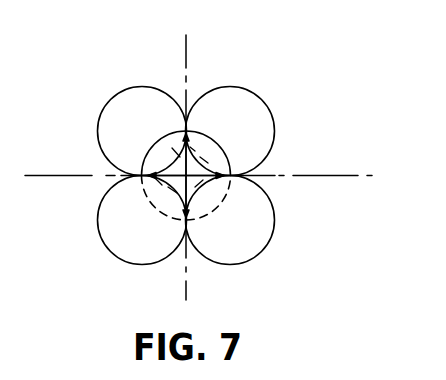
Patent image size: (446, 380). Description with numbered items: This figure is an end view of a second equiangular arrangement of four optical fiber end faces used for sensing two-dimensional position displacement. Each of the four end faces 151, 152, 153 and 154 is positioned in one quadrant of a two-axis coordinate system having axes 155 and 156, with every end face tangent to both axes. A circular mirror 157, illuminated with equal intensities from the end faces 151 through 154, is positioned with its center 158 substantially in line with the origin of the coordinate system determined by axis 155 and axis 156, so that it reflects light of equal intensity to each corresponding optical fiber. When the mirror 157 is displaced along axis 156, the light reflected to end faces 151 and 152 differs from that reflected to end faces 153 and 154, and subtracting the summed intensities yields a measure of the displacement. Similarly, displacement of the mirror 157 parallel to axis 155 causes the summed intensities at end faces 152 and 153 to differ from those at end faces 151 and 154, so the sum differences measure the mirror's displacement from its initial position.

The end face 151 is at (134, 86).
The end face 152 is at (267, 106).
The end face 153 is at (113, 255).
The end face 154 is at (275, 222).
The axis 155 is at (323, 175).
The axis 156 is at (187, 56).
The circular mirror 157 is at (145, 191).
The center 158 is at (150, 149).